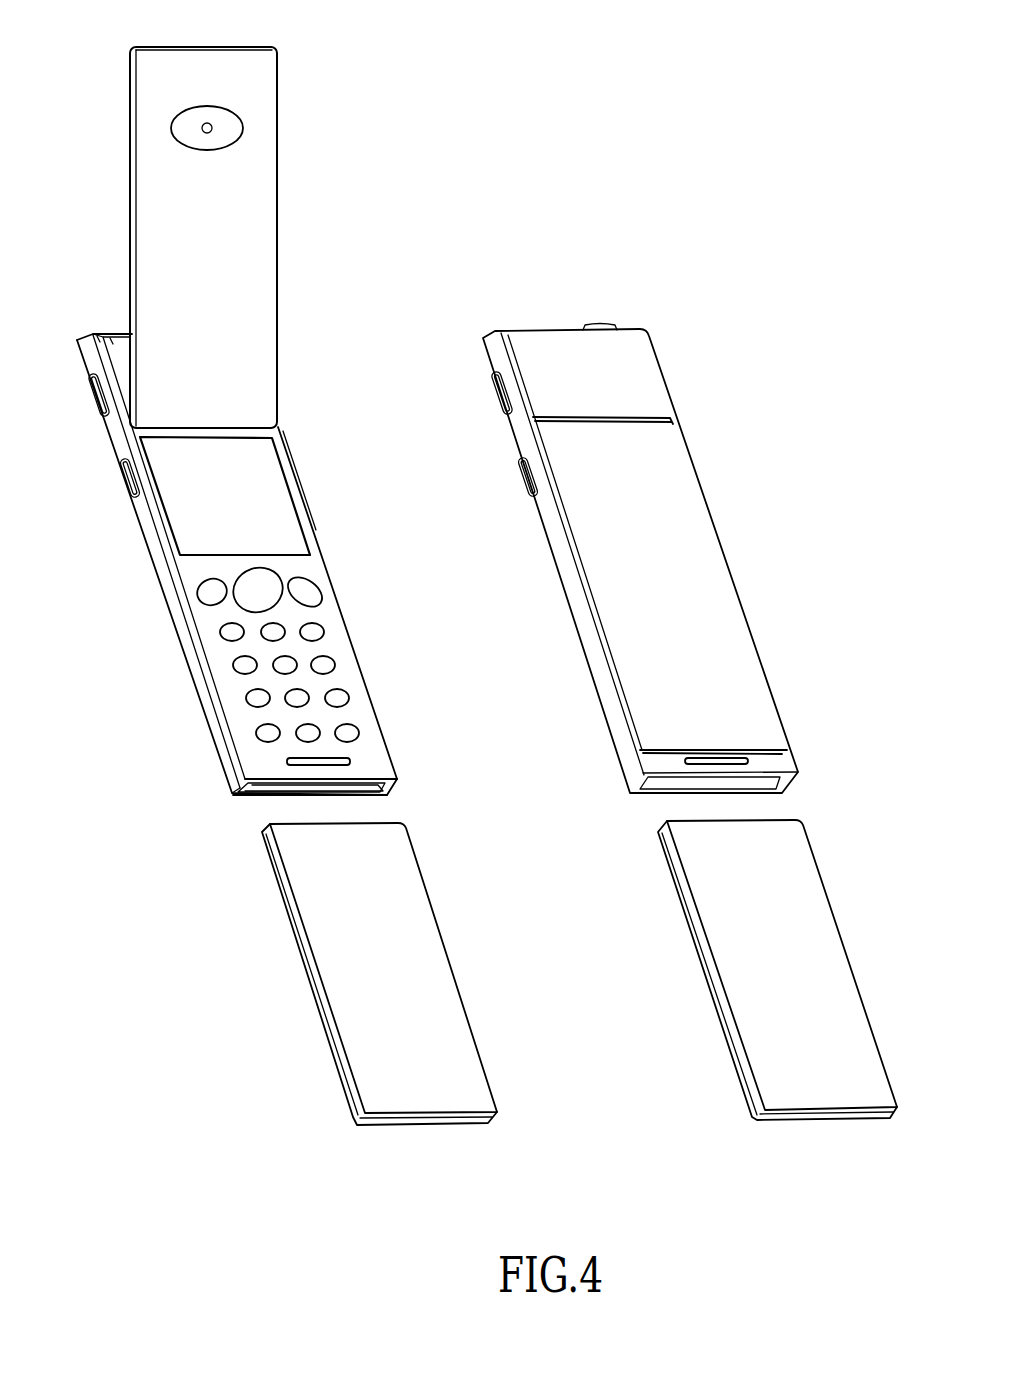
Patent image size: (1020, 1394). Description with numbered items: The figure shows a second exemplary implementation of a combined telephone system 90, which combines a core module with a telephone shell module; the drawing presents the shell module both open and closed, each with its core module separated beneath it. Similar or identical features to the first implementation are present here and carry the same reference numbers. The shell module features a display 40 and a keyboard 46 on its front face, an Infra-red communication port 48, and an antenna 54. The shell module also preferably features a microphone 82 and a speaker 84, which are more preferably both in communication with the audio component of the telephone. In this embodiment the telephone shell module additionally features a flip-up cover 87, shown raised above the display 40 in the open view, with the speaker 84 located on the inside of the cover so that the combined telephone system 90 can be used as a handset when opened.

The combined telephone system 90 is at (636, 68).
The flip-up cover 87 is at (258, 282).
The speaker 84 is at (228, 132).
The Infra-red communication port 48 is at (117, 333).
The display 40 is at (270, 505).
The keyboard 46 is at (327, 660).
The microphone 82 is at (363, 797).
The antenna 54 is at (597, 322).